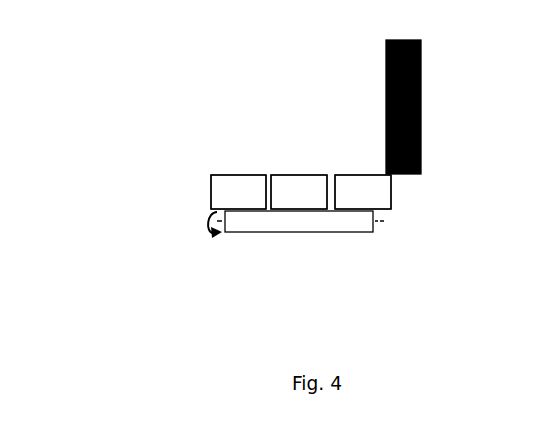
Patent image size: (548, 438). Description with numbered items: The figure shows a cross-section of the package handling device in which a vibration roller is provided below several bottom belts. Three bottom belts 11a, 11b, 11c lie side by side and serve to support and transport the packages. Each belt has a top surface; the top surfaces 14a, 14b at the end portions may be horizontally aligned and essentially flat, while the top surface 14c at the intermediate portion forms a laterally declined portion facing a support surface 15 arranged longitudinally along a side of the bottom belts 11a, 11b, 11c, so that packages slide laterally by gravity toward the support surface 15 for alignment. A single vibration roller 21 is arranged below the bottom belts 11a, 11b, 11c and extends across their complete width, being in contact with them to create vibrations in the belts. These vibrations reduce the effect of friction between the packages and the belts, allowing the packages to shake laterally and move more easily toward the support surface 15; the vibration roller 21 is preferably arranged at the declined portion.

The bottom belt 11a is at (360, 197).
The bottom belt 11b is at (308, 197).
The bottom belt 11c is at (245, 197).
The top surface 14a is at (372, 177).
The top surface 14b is at (308, 177).
The top surface 14c is at (243, 177).
The support surface 15 is at (420, 100).
The vibration roller 21 is at (358, 231).